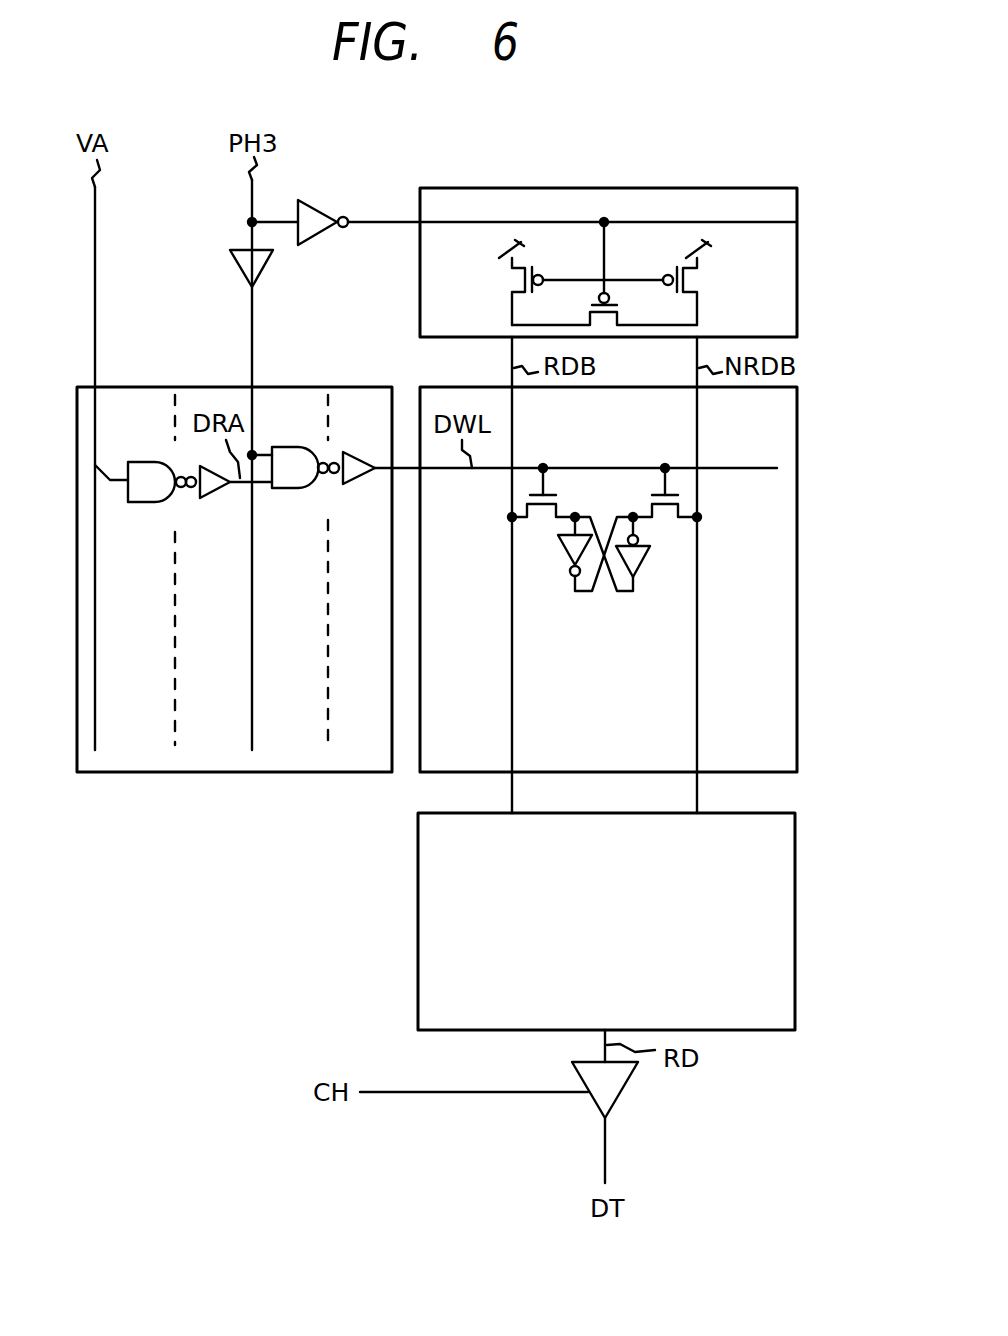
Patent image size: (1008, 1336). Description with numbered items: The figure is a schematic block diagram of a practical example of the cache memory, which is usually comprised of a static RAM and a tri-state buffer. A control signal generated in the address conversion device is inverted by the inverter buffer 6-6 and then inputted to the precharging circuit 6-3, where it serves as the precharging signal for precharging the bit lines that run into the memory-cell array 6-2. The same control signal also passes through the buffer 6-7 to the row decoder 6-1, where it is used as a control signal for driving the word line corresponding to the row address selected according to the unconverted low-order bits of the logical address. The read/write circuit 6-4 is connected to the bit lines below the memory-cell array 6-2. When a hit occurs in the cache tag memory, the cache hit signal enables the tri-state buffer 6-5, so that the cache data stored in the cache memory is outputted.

The row decoder 6-1 is at (372, 385).
The memory-cell array 6-2 is at (797, 430).
The precharging circuit 6-3 is at (797, 222).
The read/write circuit 6-4 is at (795, 848).
The tri-state buffer 6-5 is at (626, 1096).
The inverter buffer 6-6 is at (318, 200).
The buffer 6-7 is at (270, 270).